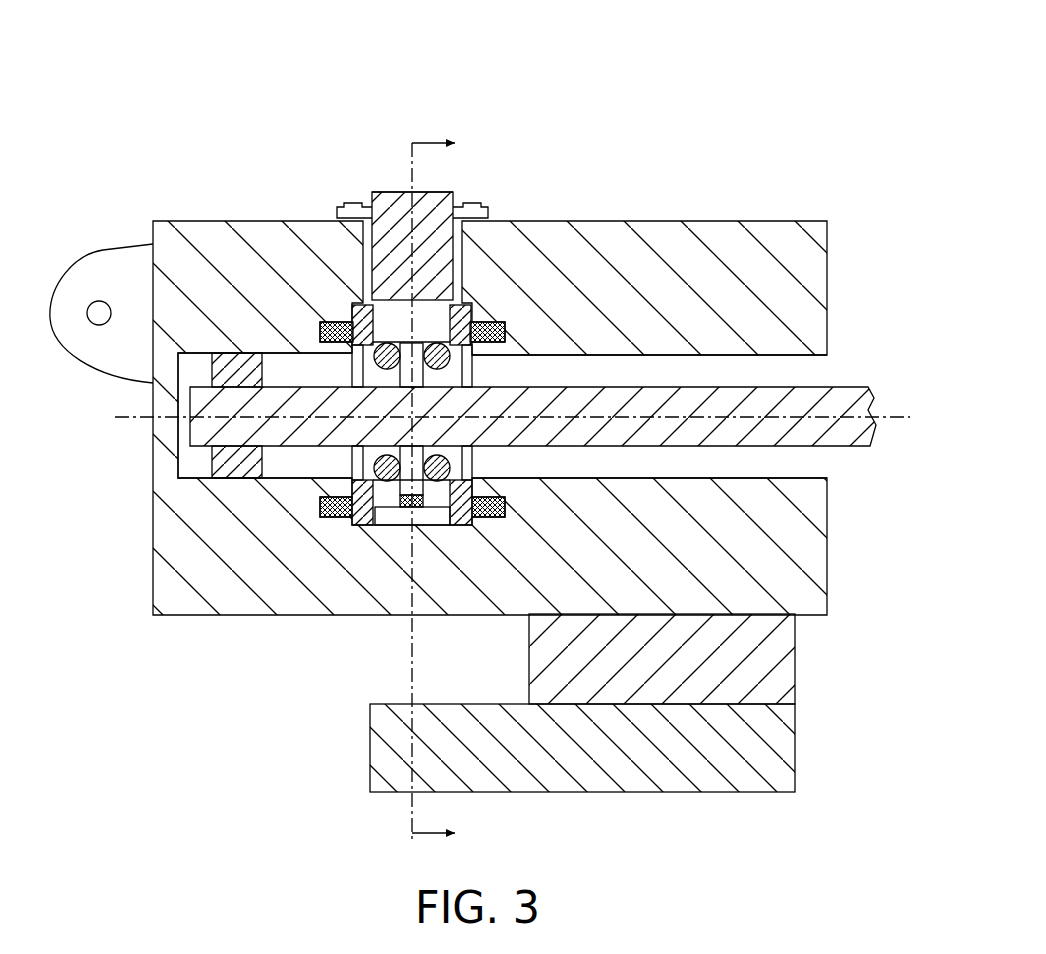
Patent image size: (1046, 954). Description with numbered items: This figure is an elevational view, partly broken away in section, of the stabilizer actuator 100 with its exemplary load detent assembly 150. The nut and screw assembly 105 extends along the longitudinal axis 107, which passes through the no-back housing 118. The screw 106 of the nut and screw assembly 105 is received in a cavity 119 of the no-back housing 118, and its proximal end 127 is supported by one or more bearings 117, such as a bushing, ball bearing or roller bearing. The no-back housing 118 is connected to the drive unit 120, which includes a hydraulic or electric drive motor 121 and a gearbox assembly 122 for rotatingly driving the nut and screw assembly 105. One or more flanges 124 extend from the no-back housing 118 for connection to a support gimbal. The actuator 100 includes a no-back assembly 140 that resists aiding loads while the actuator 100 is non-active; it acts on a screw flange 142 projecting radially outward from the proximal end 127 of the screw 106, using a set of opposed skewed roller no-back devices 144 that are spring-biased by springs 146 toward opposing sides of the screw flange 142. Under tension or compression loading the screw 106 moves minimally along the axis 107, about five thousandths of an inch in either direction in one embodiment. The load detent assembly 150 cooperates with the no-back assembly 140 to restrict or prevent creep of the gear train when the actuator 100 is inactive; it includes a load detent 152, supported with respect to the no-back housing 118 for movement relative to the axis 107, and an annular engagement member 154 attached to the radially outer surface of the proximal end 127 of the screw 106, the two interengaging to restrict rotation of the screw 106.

The actuator 100 is at (775, 74).
The nut and screw assembly 105 is at (903, 391).
The screw 106 is at (857, 386).
The longitudinal axis 107 is at (895, 422).
The bearing 117 is at (237, 368).
The no-back housing 118 is at (752, 262).
The cavity 119 is at (797, 358).
The drive unit 120 is at (643, 710).
The drive motor 121 is at (758, 752).
The gearbox assembly 122 is at (768, 662).
The flange 124 is at (103, 249).
The proximal end 127 is at (205, 372).
The no-back assembly 140 is at (443, 336).
The screw flange 142 is at (418, 522).
The skewed roller no-back device 144 is at (496, 292).
The spring 146 is at (330, 322).
The load detent assembly 150 is at (446, 195).
The load detent 152 is at (390, 190).
The engagement member 154 is at (407, 503).